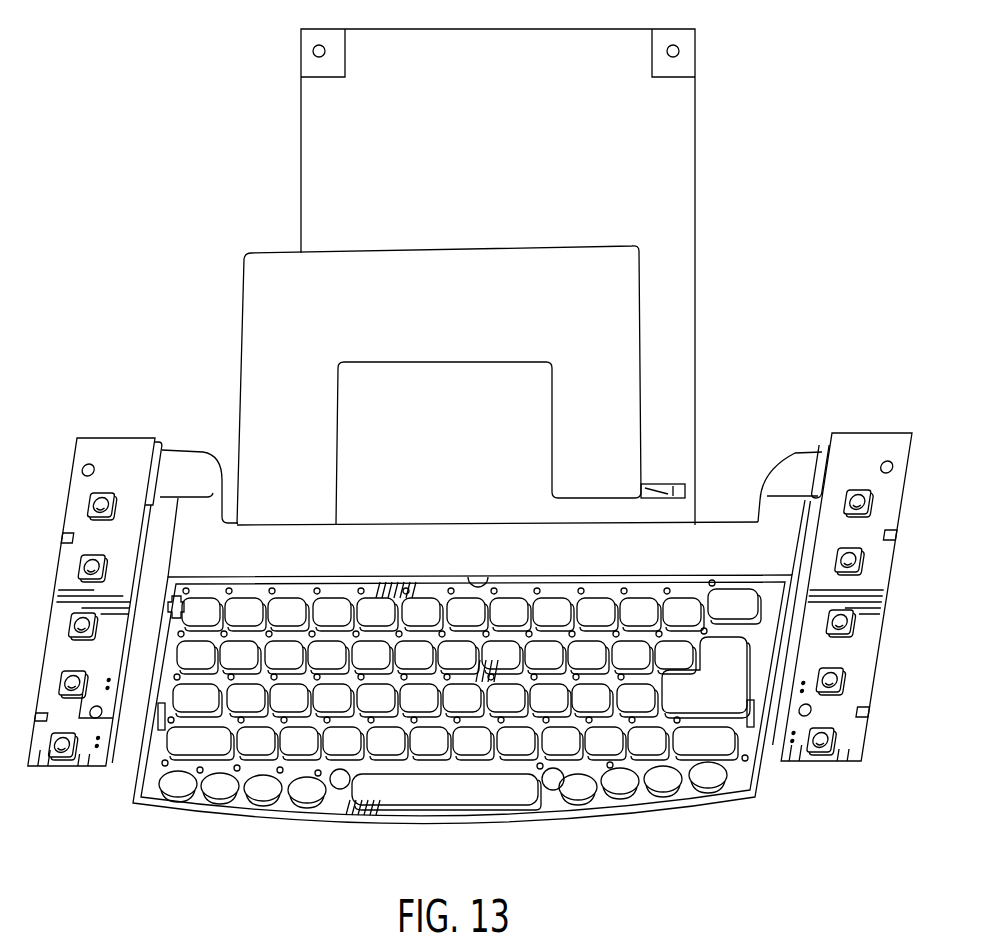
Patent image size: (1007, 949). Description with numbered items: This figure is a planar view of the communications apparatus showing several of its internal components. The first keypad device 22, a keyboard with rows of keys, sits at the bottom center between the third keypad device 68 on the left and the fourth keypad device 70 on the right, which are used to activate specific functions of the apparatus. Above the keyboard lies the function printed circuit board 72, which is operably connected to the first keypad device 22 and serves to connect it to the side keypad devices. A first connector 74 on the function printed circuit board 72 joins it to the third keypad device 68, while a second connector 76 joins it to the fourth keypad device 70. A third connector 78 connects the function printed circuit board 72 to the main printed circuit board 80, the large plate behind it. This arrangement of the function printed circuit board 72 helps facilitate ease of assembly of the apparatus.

The first keypad device 22 is at (608, 803).
The third keypad device 68 is at (83, 445).
The fourth keypad device 70 is at (868, 445).
The function printed circuit board 72 is at (252, 316).
The first connector 74 is at (165, 449).
The second connector 76 is at (823, 443).
The third connector 78 is at (685, 490).
The main printed circuit board 80 is at (695, 240).